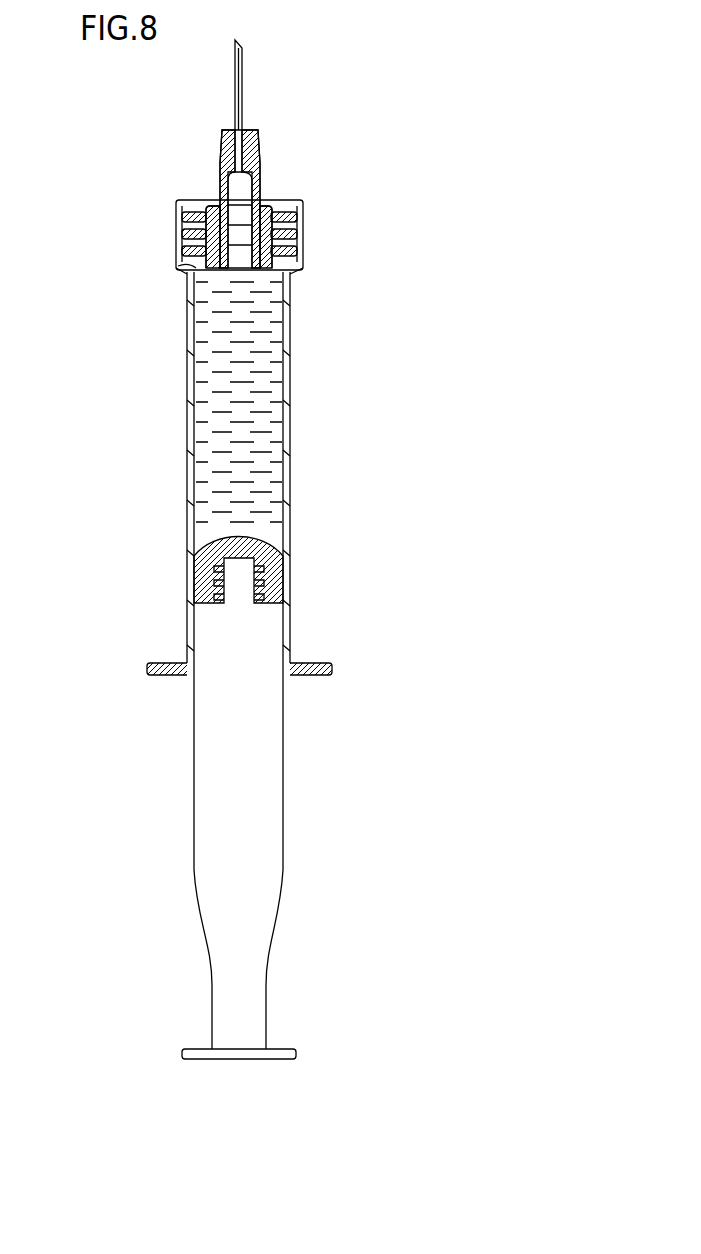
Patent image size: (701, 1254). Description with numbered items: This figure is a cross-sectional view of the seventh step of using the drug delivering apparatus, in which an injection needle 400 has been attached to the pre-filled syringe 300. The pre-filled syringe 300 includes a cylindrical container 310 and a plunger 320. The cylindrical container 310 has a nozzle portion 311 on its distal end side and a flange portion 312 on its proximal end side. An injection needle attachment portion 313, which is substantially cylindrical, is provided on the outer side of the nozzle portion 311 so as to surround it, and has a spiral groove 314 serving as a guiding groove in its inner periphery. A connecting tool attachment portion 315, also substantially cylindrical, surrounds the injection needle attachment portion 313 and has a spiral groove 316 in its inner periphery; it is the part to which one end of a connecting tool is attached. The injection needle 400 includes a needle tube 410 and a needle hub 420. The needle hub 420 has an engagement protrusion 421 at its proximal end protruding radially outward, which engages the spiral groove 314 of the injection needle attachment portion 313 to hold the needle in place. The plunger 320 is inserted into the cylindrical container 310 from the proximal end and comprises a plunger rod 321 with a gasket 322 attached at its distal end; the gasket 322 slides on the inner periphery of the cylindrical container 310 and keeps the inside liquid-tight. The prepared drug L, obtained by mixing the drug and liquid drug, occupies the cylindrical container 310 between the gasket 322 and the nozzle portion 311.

The injection needle 400 is at (239, 154).
The needle tube 410 is at (243, 76).
The needle hub 420 is at (259, 172).
The engagement protrusion 421 is at (196, 238).
The pre-filled syringe 300 is at (259, 619).
The cylindrical container 310 is at (288, 414).
The nozzle portion 311 is at (264, 204).
The flange portion 312 is at (318, 676).
The injection needle attachment portion 313 is at (274, 216).
The spiral groove 314 is at (292, 250).
The connecting tool attachment portion 315 is at (184, 217).
The spiral groove 316 is at (188, 266).
The plunger 320 is at (278, 867).
The plunger rod 321 is at (270, 818).
The gasket 322 is at (263, 552).
The drug L is at (208, 411).